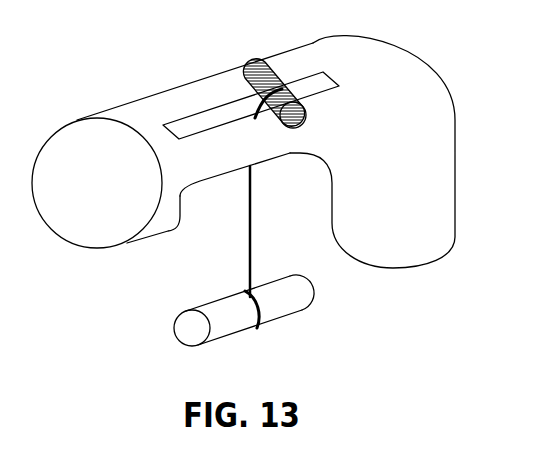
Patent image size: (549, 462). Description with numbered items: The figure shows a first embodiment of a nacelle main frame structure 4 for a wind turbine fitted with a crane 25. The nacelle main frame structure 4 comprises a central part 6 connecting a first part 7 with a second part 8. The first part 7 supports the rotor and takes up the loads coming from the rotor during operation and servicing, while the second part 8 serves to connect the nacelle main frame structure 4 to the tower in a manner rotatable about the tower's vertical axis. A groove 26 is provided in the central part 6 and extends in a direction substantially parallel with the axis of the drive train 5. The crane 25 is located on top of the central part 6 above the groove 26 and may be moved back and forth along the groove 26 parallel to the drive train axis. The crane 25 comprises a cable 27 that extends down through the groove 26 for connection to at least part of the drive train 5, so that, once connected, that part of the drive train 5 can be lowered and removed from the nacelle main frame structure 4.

The nacelle main frame structure 4 is at (277, 146).
The drive train 5 is at (296, 297).
The central part 6 is at (232, 166).
The first part 7 is at (109, 184).
The second part 8 is at (398, 200).
The crane 25 is at (260, 78).
The groove 26 is at (202, 127).
The cable 27 is at (248, 229).